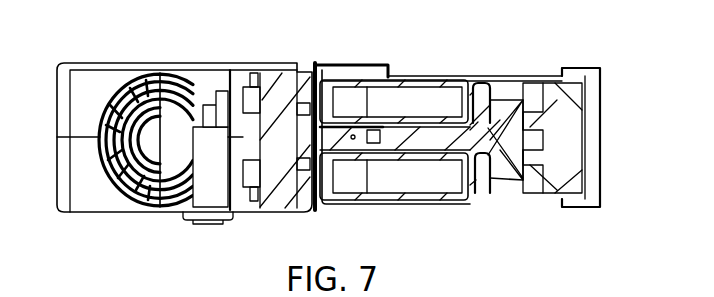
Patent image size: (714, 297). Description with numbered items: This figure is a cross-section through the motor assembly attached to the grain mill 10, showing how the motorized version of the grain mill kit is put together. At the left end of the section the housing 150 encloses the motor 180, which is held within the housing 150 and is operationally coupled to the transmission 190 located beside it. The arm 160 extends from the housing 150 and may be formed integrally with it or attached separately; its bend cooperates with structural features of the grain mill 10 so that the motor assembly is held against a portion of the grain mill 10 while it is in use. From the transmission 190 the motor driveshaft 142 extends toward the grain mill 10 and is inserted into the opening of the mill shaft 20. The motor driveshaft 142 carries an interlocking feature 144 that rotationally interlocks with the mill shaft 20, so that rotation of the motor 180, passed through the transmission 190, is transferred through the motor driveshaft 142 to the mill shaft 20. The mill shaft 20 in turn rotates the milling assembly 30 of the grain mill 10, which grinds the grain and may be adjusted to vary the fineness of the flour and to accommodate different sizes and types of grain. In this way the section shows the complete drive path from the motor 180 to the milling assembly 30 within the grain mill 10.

The grain mill 10 is at (537, 75).
The mill shaft 20 is at (403, 127).
The milling assembly 30 is at (500, 153).
The motor driveshaft 142 is at (332, 118).
The interlocking feature 144 is at (355, 140).
The housing 150 is at (148, 66).
The arm 160 is at (331, 63).
The motor 180 is at (177, 100).
The transmission 190 is at (275, 103).